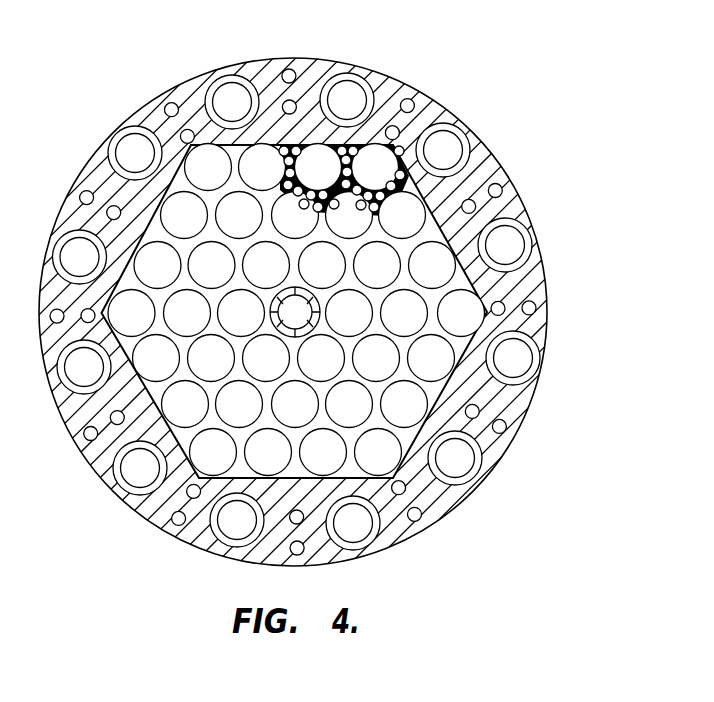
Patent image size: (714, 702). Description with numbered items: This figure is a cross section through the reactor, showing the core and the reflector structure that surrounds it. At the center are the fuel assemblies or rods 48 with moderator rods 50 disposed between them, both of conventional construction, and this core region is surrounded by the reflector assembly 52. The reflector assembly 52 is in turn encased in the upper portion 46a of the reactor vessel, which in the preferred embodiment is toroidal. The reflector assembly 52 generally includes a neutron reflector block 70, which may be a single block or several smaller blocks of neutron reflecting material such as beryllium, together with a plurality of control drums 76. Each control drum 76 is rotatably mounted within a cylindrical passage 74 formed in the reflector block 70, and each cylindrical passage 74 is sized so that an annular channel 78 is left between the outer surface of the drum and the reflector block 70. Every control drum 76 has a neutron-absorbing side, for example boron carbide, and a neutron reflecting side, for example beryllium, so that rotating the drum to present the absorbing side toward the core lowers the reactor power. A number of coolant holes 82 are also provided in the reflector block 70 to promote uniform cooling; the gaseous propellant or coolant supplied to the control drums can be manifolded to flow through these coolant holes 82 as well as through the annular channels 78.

The upper portion of reactor vessel 46a is at (318, 305).
The fuel assemblies or rods 48 is at (435, 362).
The moderator rods 50 is at (346, 248).
The reflector assembly 52 is at (357, 310).
The neutron reflector block 70 is at (485, 163).
The cylindrical passage 74 is at (449, 134).
The control drum 76 is at (324, 307).
The annular channel 78 is at (497, 158).
The coolant holes 82 is at (408, 492).